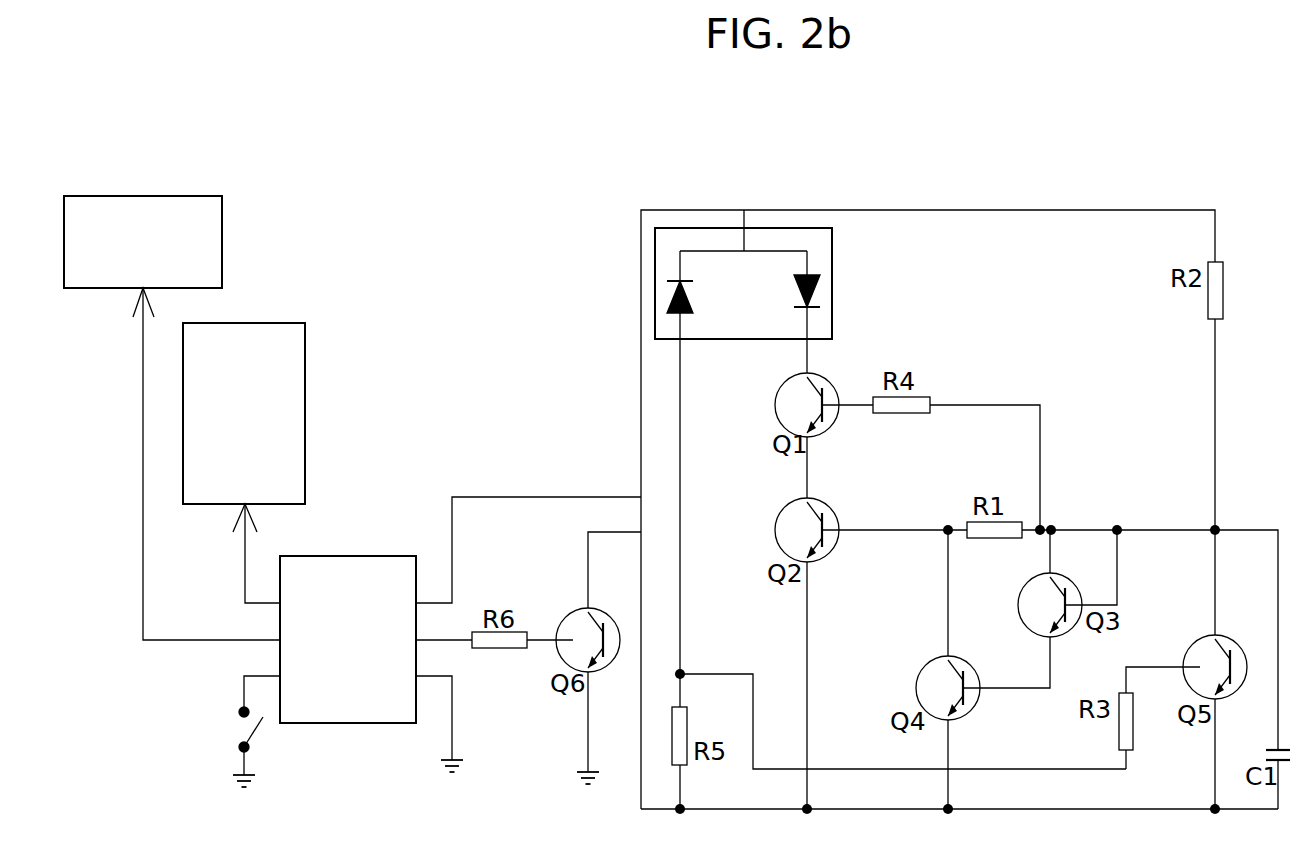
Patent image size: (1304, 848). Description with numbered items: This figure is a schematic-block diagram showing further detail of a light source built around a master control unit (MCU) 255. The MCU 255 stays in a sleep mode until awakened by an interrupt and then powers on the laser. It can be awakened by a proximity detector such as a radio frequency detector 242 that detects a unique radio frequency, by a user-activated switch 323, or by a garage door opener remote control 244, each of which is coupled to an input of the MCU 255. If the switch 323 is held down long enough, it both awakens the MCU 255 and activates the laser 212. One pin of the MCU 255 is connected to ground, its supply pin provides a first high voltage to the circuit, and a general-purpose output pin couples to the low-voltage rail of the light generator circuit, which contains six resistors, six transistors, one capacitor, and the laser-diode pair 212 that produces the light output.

The radio frequency detector 242 is at (190, 196).
The garage door opener remote control 244 is at (267, 323).
The master control unit 255 is at (348, 556).
The laser-diode pair 212 is at (832, 283).
The user-activated switch 323 is at (263, 742).